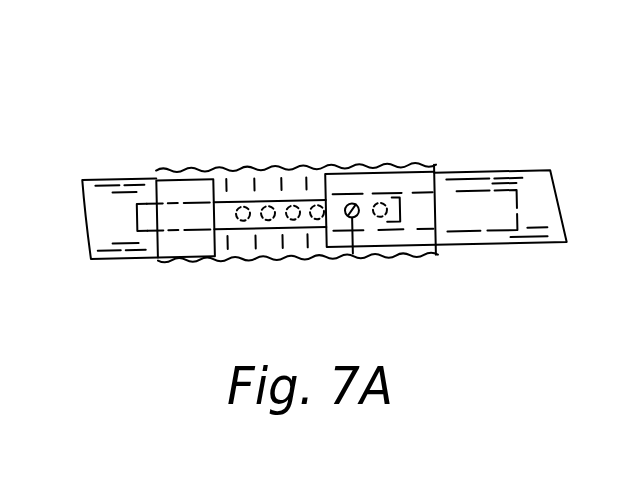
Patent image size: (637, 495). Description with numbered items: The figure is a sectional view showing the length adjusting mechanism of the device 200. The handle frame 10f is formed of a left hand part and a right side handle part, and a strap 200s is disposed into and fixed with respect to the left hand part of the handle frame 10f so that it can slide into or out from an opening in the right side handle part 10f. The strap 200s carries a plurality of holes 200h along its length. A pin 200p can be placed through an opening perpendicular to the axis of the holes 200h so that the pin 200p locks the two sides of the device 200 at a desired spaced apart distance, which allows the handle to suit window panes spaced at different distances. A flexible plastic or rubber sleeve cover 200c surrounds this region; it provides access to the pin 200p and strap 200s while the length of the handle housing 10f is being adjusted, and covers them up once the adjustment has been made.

The handle frame 10f is at (118, 178).
The device 200 is at (400, 124).
The sleeve cover 200c is at (186, 170).
The holes 200h is at (270, 200).
The strap 200s is at (246, 228).
The pin 200p is at (356, 259).